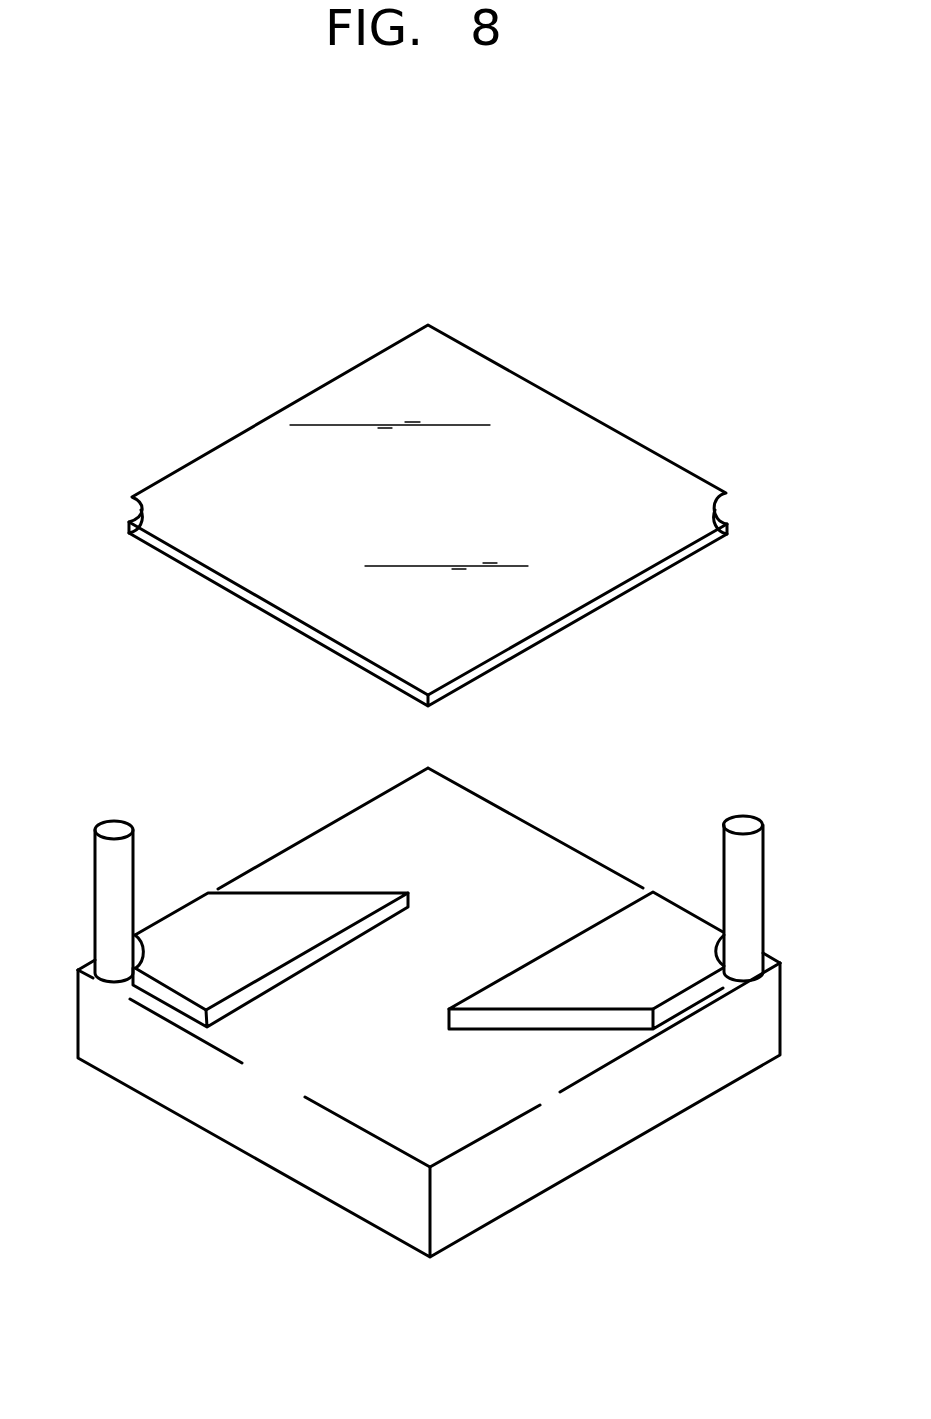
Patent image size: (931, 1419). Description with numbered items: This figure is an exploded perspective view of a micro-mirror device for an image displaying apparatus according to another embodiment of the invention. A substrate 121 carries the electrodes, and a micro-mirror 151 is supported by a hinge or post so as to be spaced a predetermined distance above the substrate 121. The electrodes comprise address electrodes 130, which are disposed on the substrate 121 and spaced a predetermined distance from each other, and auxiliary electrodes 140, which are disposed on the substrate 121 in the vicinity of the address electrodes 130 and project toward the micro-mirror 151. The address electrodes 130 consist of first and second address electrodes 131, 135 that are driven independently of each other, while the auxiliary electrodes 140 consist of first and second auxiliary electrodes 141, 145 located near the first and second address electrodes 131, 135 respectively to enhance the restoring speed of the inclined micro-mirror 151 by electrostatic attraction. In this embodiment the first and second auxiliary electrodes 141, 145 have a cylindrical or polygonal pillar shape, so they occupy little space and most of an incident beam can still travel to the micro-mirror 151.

The substrate 121 is at (740, 1075).
The address electrodes 130 is at (428, 982).
The first address electrode 131 is at (303, 967).
The second address electrode 135 is at (472, 997).
The auxiliary electrodes 140 is at (429, 1092).
The first auxiliary electrode 141 is at (110, 945).
The second auxiliary electrode 145 is at (743, 933).
The micro-mirror 151 is at (593, 433).